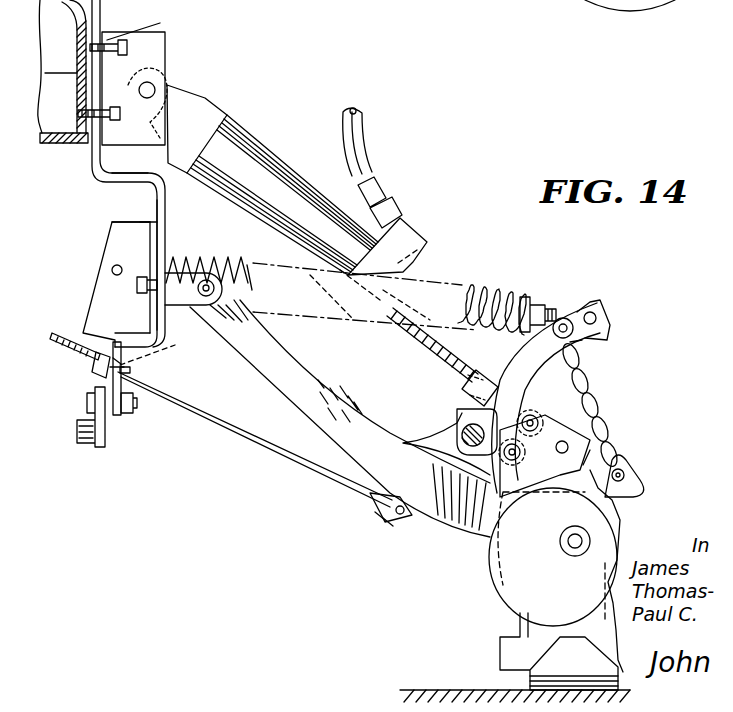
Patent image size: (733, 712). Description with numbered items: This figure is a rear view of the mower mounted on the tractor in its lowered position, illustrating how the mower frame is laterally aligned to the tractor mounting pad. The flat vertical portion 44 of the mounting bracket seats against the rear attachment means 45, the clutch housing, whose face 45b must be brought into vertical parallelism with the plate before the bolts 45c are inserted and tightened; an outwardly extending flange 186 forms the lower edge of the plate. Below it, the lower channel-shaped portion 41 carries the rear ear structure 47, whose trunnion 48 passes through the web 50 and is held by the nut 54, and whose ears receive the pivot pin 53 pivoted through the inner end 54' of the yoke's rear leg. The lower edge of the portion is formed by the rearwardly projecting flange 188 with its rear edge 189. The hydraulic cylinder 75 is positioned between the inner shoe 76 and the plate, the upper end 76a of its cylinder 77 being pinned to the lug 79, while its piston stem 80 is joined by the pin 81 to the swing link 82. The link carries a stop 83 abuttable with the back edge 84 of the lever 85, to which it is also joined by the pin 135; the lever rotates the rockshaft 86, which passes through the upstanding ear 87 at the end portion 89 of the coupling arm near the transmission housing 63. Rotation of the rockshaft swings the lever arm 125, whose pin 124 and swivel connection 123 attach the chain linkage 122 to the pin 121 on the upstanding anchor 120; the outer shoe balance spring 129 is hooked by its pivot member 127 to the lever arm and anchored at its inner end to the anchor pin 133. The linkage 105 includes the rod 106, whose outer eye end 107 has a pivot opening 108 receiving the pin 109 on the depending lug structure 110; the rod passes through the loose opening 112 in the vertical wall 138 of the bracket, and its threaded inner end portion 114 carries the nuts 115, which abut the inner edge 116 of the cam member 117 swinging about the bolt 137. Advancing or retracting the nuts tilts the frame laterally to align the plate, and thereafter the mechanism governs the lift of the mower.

The lower channel-shaped portion 41 is at (155, 207).
The flat vertical portion 44 is at (92, 160).
The rear attachment means 45 is at (63, 71).
The face 45b is at (60, 76).
The bolts 45c is at (150, 40).
The rear ear structure 47 is at (178, 275).
The trunnion 48 is at (135, 284).
The web 50 is at (168, 222).
The pivot pin 53 is at (207, 278).
The nut 54 is at (131, 251).
The inner end of rear leg 54' is at (340, 418).
The transmission housing 63 is at (640, 515).
The hydraulic cylinder 75 is at (256, 126).
The inner shoe 76 is at (545, 668).
The upper end of cylinder 76a is at (175, 108).
The cylinder 77 is at (278, 172).
The lug 79 is at (158, 54).
The piston stem 80 is at (418, 340).
The pin 81 is at (560, 420).
The swing link 82 is at (530, 412).
The stop 83 is at (508, 395).
The back edge 84 is at (458, 418).
The lever 85 is at (520, 498).
The rockshaft 86 is at (403, 443).
The upstanding ear 87 is at (432, 455).
The end portion of coupling arm 89 is at (460, 515).
The linkage 105 is at (268, 472).
The rod 106 is at (215, 437).
The outer eye end 107 is at (375, 514).
The pivot opening 108 is at (402, 520).
The pin 109 is at (386, 524).
The depending lug structure 110 is at (372, 500).
The loose opening 112 is at (156, 374).
The threaded inner end portion 114 is at (56, 352).
The combination abutment and locking nuts 115 is at (96, 366).
The inner edge of cam 116 is at (77, 428).
The cam member 117 is at (124, 368).
The upstanding anchor 120 is at (636, 488).
The pin 121 is at (640, 462).
The chain linkage 122 is at (592, 390).
The swivel connection 123 is at (590, 342).
The pin 124 is at (564, 318).
The lever arm 125 is at (600, 334).
The pivot member 127 is at (598, 300).
The outer shoe balance spring 129 is at (488, 288).
The anchor pin 133 is at (110, 265).
The pin 135 is at (512, 465).
The bolt 137 is at (134, 410).
The vertical wall 138 is at (150, 382).
The outwardly extending flange 186 is at (128, 182).
The rearwardly projecting flange 188 is at (135, 340).
The rear edge 189 is at (97, 318).